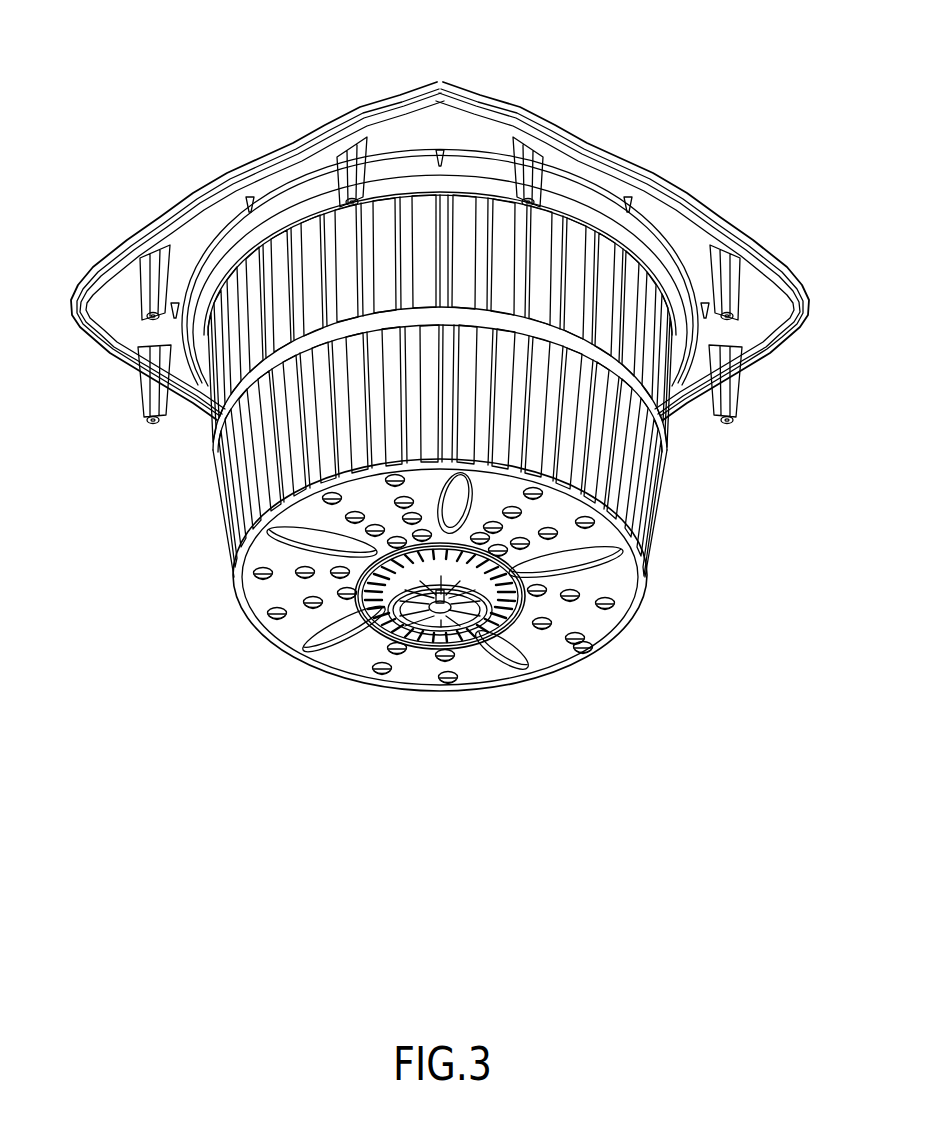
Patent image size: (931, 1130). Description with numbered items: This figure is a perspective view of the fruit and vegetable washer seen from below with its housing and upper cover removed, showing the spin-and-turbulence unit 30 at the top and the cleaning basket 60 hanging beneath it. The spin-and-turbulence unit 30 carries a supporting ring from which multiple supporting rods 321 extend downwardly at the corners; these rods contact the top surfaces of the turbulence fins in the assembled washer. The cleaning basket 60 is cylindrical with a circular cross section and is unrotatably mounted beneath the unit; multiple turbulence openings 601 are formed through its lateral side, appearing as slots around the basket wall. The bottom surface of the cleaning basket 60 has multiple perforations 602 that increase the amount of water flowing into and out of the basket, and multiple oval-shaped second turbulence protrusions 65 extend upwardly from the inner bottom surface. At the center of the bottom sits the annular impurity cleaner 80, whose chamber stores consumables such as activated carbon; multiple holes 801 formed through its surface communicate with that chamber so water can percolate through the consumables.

The spin-and-turbulence unit 30 is at (463, 66).
The supporting rods 321 is at (148, 300).
The cleaning basket 60 is at (445, 465).
The turbulence openings 601 is at (595, 427).
The perforations 602 is at (584, 648).
The second turbulence protrusions 65 is at (600, 563).
The annular impurity cleaner 80 is at (436, 640).
The holes 801 is at (385, 635).